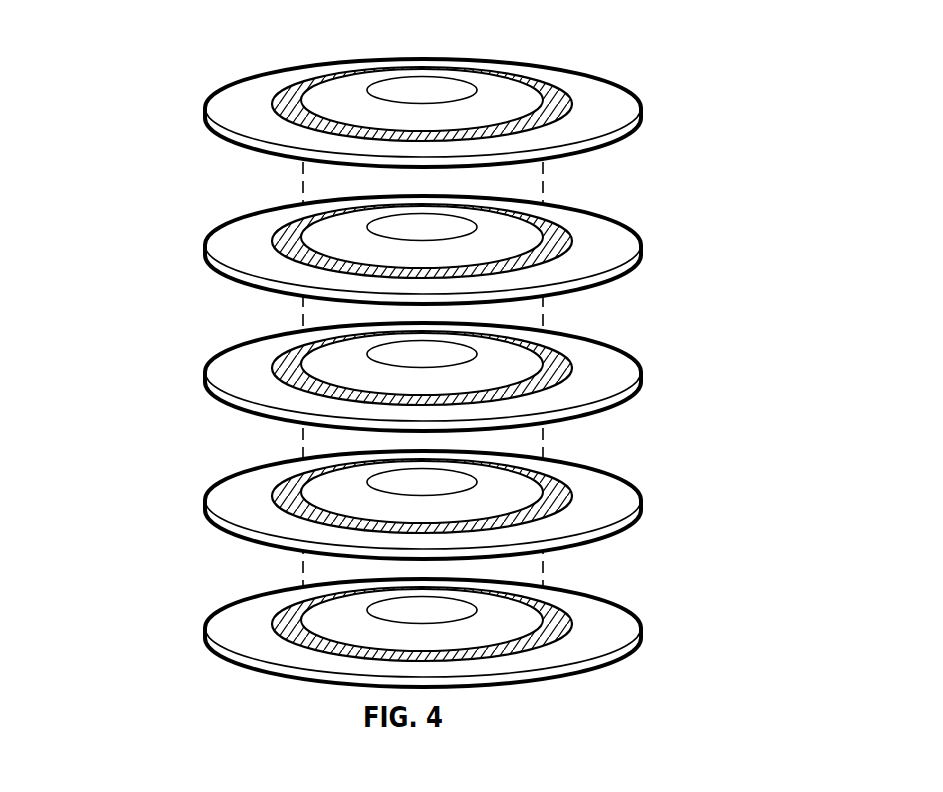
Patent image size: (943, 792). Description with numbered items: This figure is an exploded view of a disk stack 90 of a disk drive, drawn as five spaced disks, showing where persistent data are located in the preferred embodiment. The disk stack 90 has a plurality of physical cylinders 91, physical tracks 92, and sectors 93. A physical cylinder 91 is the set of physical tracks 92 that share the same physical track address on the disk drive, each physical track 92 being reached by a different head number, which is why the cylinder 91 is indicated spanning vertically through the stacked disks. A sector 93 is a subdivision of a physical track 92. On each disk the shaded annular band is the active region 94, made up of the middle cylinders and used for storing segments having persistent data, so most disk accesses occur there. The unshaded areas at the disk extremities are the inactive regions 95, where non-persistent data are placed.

The disk stack 90 is at (133, 202).
The physical cylinder 91 is at (552, 570).
The physical track 92 is at (317, 515).
The sector 93 is at (353, 648).
The active region 94 is at (557, 95).
The inactive region 95 is at (338, 88).